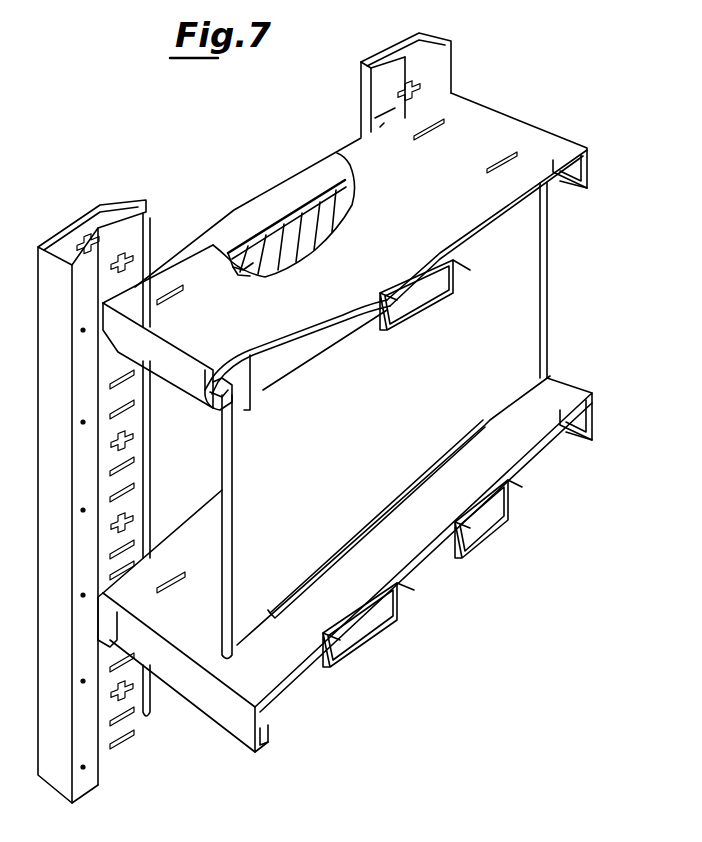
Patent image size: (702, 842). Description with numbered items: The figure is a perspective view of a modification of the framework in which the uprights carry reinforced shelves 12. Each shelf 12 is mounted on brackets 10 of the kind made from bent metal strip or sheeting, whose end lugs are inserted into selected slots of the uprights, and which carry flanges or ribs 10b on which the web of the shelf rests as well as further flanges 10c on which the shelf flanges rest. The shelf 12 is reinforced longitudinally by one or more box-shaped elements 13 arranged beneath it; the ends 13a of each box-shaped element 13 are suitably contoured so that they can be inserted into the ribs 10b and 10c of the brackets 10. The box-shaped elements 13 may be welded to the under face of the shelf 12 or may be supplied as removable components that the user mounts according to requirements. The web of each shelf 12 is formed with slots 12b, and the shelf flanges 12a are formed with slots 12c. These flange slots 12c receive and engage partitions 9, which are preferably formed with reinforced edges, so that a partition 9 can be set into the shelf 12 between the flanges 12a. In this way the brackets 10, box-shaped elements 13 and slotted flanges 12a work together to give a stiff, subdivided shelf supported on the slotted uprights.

The partition 9 is at (503, 307).
The bracket 10 is at (280, 198).
The flange or rib of the bracket 10b is at (237, 253).
The further flange of the bracket 10c is at (250, 268).
The reinforced shelf 12 is at (497, 133).
The shelf flange 12a is at (215, 402).
The web slot 12b is at (170, 293).
The flange slot 12c is at (236, 392).
The box-shaped element 13 is at (472, 538).
The end of box-shaped element 13a is at (262, 233).